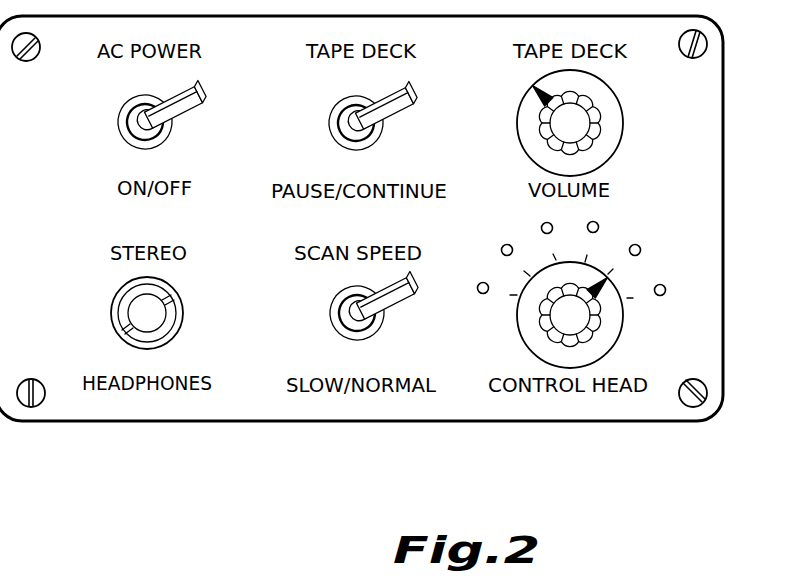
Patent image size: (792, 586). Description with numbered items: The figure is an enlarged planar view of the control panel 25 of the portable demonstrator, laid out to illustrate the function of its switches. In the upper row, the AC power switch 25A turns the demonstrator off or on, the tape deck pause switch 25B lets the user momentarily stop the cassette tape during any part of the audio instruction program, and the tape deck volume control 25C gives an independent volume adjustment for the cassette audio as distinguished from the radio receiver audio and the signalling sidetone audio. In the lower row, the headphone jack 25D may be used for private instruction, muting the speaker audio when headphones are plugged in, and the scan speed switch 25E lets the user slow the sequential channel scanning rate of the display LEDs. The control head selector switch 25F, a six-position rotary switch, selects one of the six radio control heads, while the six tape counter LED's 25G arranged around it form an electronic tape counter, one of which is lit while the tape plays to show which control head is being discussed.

The control panel 25 is at (714, 208).
The AC power switch 25A is at (124, 136).
The tape deck pause switch 25B is at (339, 138).
The tape deck volume control 25C is at (610, 145).
The headphone jack 25D is at (183, 310).
The scan speed switch 25E is at (374, 328).
The control head selector switch 25F is at (612, 332).
The tape counter LED's 25G is at (661, 284).